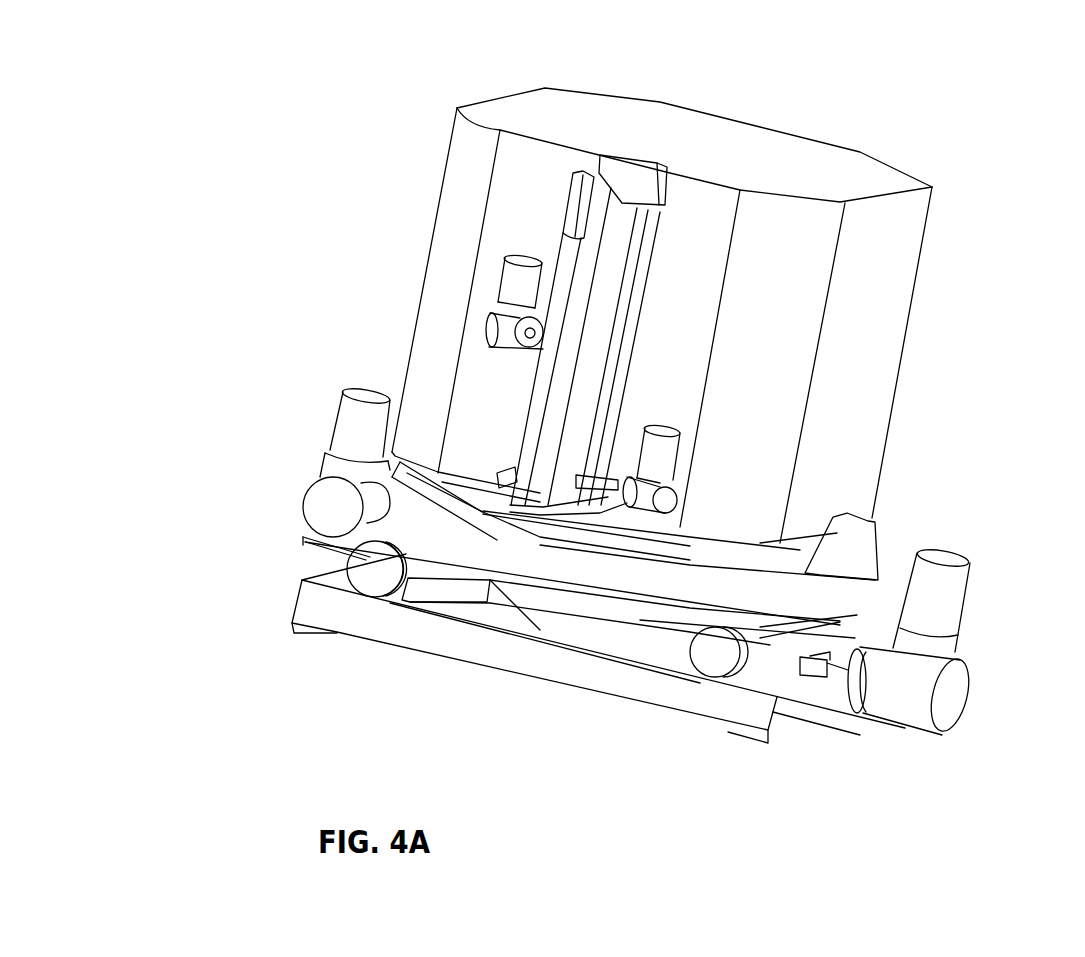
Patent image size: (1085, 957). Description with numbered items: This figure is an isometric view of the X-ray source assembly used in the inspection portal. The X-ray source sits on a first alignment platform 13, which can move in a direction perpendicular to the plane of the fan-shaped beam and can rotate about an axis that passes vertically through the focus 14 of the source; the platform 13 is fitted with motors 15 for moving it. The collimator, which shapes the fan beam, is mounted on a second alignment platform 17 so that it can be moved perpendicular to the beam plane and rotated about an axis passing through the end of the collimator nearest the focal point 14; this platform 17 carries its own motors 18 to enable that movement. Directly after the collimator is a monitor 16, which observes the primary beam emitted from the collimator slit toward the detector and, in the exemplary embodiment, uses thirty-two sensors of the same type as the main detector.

The first alignment platform 13 is at (760, 658).
The focus 14 is at (688, 348).
The motors 15 is at (352, 437).
The monitor 16 is at (578, 197).
The second alignment platform 17 is at (597, 500).
The motors 18 is at (520, 287).